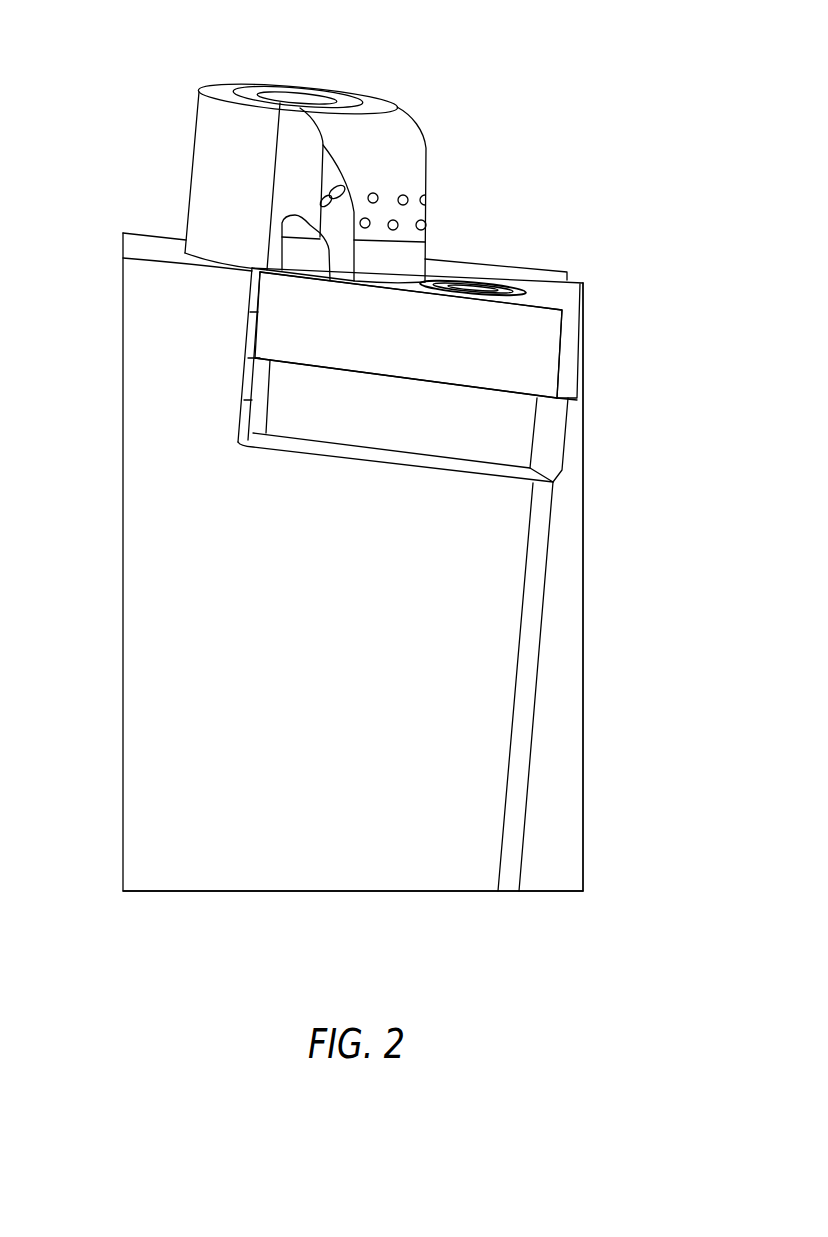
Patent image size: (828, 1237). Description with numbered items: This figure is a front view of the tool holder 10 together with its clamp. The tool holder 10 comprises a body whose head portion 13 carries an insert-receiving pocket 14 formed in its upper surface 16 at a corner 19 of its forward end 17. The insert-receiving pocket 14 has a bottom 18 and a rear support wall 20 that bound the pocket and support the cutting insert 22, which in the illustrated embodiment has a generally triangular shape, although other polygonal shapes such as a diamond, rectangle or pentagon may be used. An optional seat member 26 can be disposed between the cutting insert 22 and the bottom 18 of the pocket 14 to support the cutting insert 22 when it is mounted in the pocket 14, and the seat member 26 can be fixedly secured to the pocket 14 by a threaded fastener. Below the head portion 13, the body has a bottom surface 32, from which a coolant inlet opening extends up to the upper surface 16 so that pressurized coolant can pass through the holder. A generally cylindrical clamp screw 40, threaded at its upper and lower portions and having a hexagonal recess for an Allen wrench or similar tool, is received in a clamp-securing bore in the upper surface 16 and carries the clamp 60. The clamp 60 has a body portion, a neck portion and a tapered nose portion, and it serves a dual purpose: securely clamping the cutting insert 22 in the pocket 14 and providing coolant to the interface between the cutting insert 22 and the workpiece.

The tool holder 10 is at (628, 104).
The head portion 13 is at (208, 695).
The insert-receiving pocket 14 is at (600, 330).
The upper surface 16 is at (152, 245).
The forward end 17 is at (550, 760).
The bottom 18 is at (362, 461).
The corner 19 is at (518, 690).
The rear support wall 20 is at (250, 312).
The cutting insert 22 is at (357, 340).
The seat member 26 is at (483, 445).
The bottom surface 32 is at (236, 893).
The clamp screw 40 is at (292, 90).
The clamp 60 is at (428, 108).